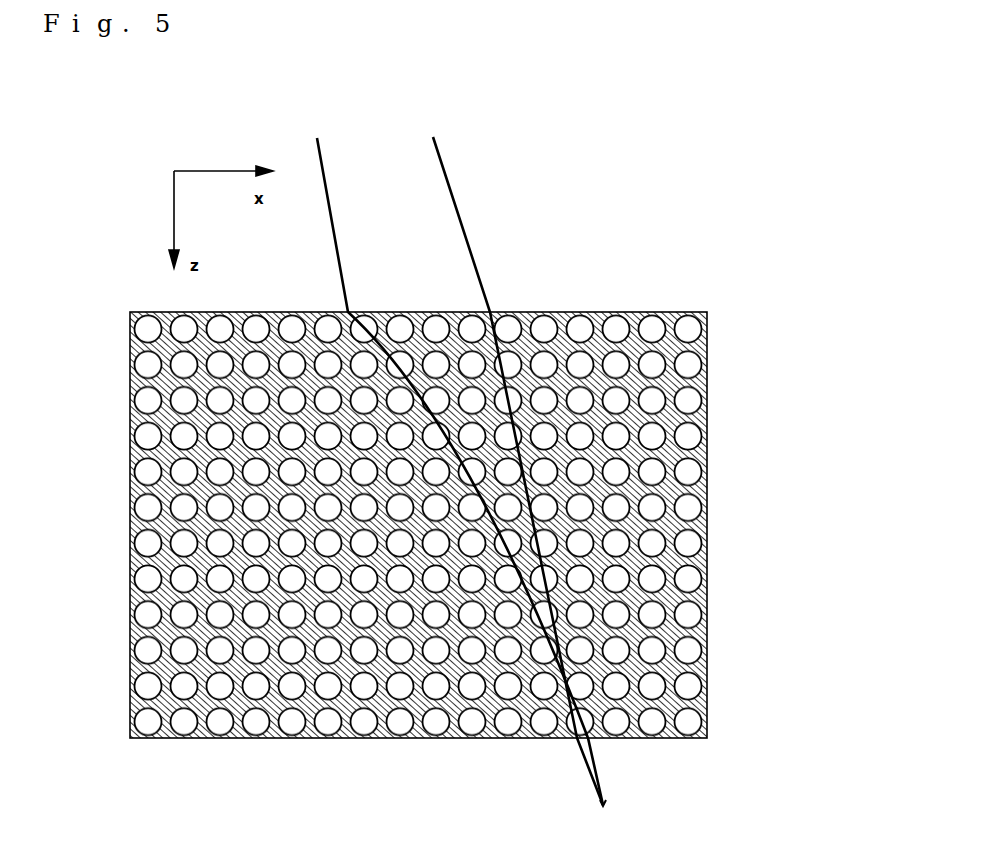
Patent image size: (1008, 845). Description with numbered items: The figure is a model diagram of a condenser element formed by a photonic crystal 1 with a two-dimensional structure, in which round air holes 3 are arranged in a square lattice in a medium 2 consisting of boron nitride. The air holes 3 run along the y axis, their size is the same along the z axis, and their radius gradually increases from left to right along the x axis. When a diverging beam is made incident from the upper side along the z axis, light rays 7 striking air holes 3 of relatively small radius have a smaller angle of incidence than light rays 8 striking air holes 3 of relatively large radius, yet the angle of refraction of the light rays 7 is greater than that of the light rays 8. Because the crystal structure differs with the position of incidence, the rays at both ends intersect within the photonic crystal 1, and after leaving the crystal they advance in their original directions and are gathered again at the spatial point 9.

The photonic crystal 1 is at (738, 523).
The medium 2 is at (708, 407).
The air holes 3 is at (687, 367).
The light rays 7 is at (328, 190).
The light rays 8 is at (472, 245).
The spatial point 9 is at (603, 805).